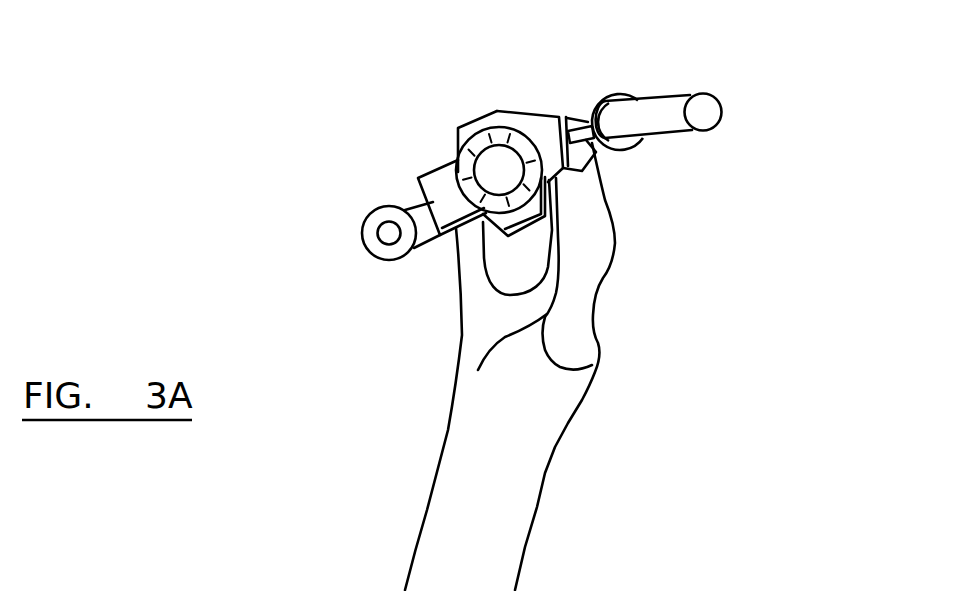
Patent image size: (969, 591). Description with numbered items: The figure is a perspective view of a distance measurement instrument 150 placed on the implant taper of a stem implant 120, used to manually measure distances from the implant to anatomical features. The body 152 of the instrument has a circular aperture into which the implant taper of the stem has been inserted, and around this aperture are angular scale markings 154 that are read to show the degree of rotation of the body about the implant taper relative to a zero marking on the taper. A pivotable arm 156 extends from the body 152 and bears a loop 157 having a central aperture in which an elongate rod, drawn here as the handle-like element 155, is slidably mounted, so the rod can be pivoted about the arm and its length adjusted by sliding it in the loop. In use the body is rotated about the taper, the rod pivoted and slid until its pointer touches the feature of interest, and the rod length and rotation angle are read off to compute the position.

The stem implant 120 is at (527, 258).
The distance measurement instrument 150 is at (464, 118).
The body 152 is at (457, 162).
The angular scale markings 154 is at (487, 127).
The handle rod 155 is at (662, 108).
The pivotable arm 156 is at (574, 119).
The loop 157 is at (619, 95).